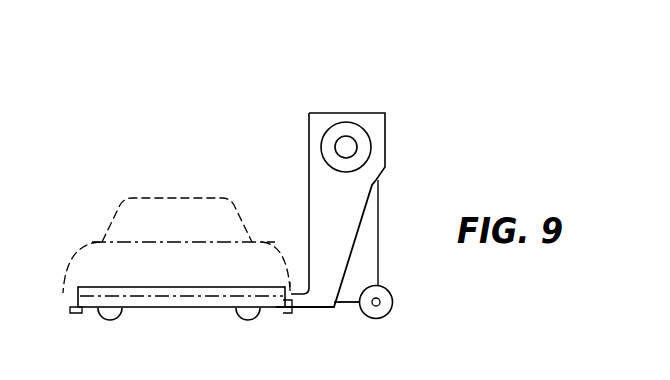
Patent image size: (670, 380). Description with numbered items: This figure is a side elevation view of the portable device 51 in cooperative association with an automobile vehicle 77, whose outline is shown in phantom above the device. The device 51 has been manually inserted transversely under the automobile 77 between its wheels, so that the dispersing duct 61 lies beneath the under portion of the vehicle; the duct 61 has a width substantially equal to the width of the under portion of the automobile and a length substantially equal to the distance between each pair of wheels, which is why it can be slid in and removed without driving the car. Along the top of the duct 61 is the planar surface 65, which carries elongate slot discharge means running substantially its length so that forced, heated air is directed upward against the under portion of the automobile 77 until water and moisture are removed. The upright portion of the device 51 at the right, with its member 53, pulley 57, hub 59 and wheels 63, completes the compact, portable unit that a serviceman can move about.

The portable device 51 is at (308, 197).
The mast head 53 is at (347, 112).
The pulley 57 is at (357, 147).
The pulley axle 59 is at (378, 147).
The dispersing duct 61 is at (117, 287).
The wheels 63 is at (388, 291).
The planar surface 65 is at (186, 292).
The automobile vehicle 77 is at (193, 197).